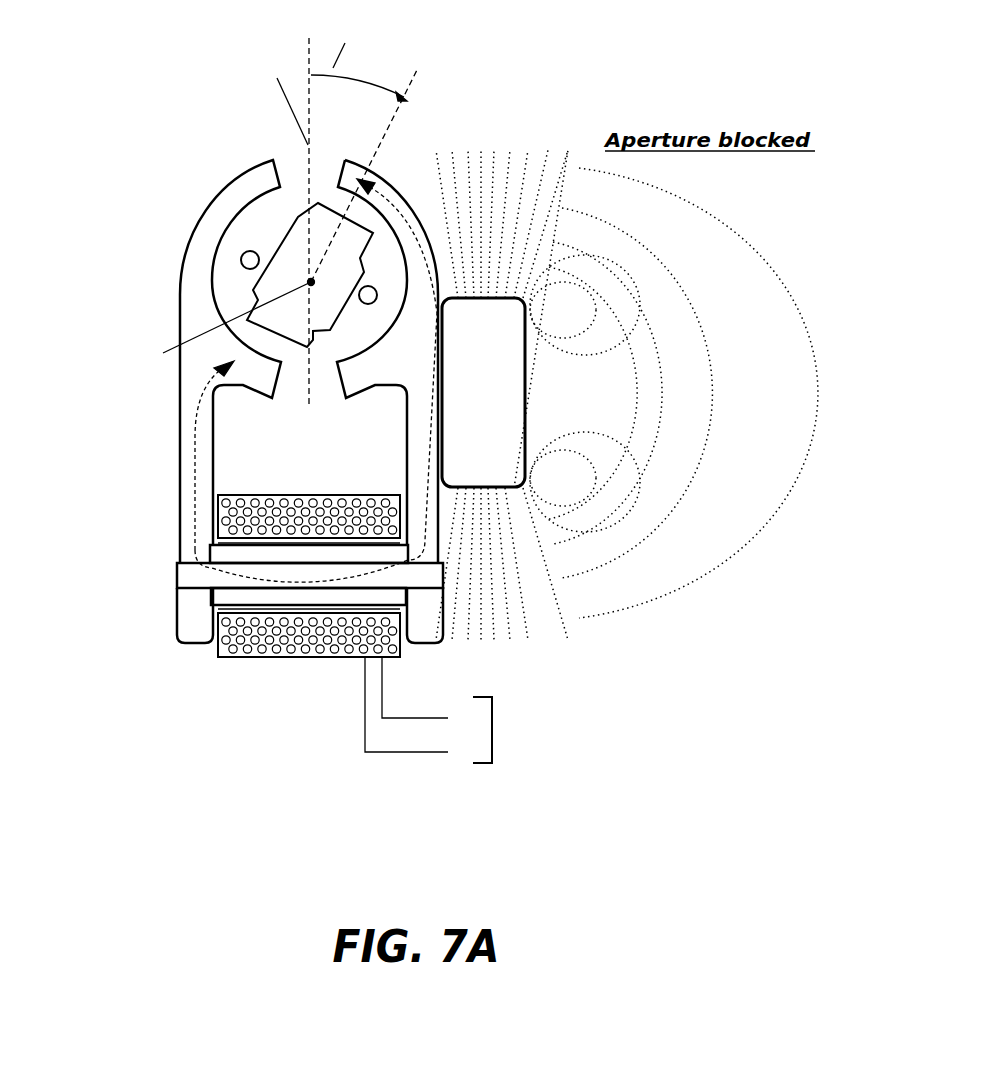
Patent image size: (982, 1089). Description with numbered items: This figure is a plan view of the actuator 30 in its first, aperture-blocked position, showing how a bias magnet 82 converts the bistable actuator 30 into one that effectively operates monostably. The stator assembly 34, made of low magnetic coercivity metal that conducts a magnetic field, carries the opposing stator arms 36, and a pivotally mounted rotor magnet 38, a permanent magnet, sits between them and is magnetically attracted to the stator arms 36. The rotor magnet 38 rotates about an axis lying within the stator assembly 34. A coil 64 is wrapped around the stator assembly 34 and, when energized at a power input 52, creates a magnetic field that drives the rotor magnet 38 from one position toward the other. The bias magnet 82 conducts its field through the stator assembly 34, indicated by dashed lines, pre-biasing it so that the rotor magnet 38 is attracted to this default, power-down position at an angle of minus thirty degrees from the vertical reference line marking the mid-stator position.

The actuator 30 is at (109, 428).
The stator assembly 34 is at (188, 208).
The stator arms 36 is at (262, 162).
The rotor magnet 38 is at (262, 288).
The power input 52 is at (494, 727).
The coil 64 is at (213, 648).
The bias magnet 82 is at (466, 368).